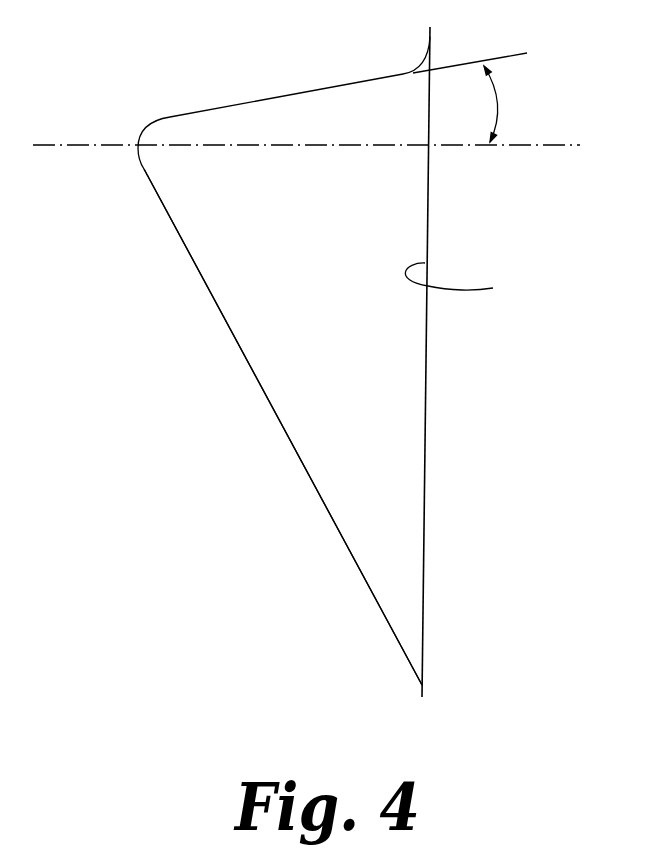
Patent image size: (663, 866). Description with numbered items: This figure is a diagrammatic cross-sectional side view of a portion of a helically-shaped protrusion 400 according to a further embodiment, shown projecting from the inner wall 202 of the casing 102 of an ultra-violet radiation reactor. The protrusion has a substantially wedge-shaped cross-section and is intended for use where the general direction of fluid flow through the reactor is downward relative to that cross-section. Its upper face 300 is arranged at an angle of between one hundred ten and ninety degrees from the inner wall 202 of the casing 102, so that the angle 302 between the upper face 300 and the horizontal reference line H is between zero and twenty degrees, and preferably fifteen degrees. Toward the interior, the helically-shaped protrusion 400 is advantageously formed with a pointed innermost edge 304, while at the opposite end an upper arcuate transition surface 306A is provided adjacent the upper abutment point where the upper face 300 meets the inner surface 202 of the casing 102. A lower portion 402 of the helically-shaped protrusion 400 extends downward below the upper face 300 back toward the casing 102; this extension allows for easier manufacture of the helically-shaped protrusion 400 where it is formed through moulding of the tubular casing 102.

The casing 102 is at (430, 205).
The inner wall 202 is at (470, 283).
The upper face 300 is at (267, 100).
The angle 302 is at (498, 103).
The pointed innermost edge 304 is at (135, 158).
The upper arcuate transition surface 306A is at (417, 65).
The helically-shaped protrusion 400 is at (133, 302).
The lower portion 402 is at (310, 382).
The horizontal reference axis H is at (557, 143).